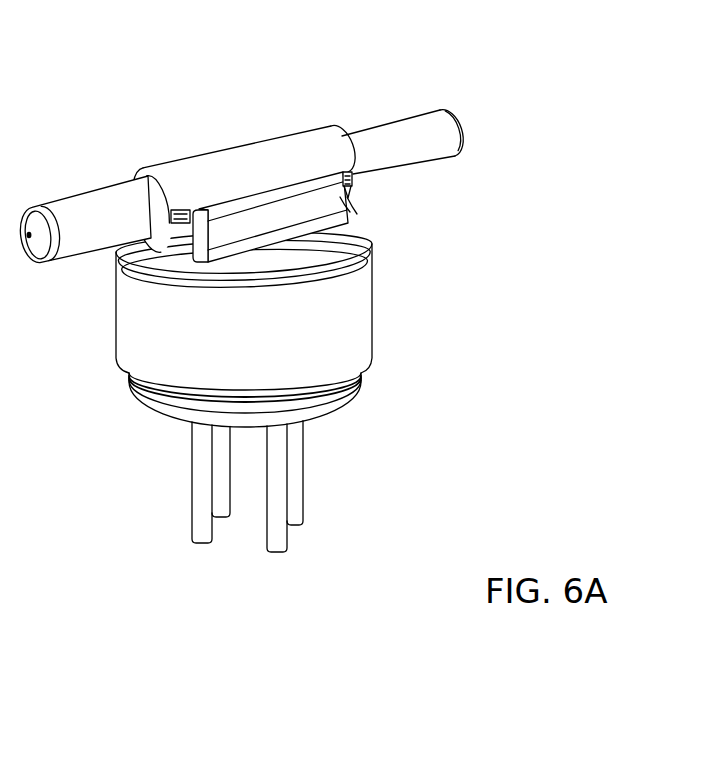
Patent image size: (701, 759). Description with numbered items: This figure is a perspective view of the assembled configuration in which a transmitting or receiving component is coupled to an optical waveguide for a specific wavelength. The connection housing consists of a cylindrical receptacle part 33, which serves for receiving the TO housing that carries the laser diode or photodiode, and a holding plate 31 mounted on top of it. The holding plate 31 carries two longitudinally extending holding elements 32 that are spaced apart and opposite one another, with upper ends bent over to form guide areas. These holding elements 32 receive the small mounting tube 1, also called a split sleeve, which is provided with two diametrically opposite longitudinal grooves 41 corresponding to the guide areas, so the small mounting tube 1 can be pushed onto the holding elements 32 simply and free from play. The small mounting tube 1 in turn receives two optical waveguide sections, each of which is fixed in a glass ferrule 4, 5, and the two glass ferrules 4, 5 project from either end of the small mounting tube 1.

The small mounting tube 1 is at (317, 142).
The glass ferrule 4 is at (90, 203).
The glass ferrule 5 is at (415, 130).
The holding plate 31 is at (350, 240).
The holding elements 32 is at (352, 204).
The cylindrical receptacle part 33 is at (360, 318).
The longitudinal grooves 41 is at (172, 223).